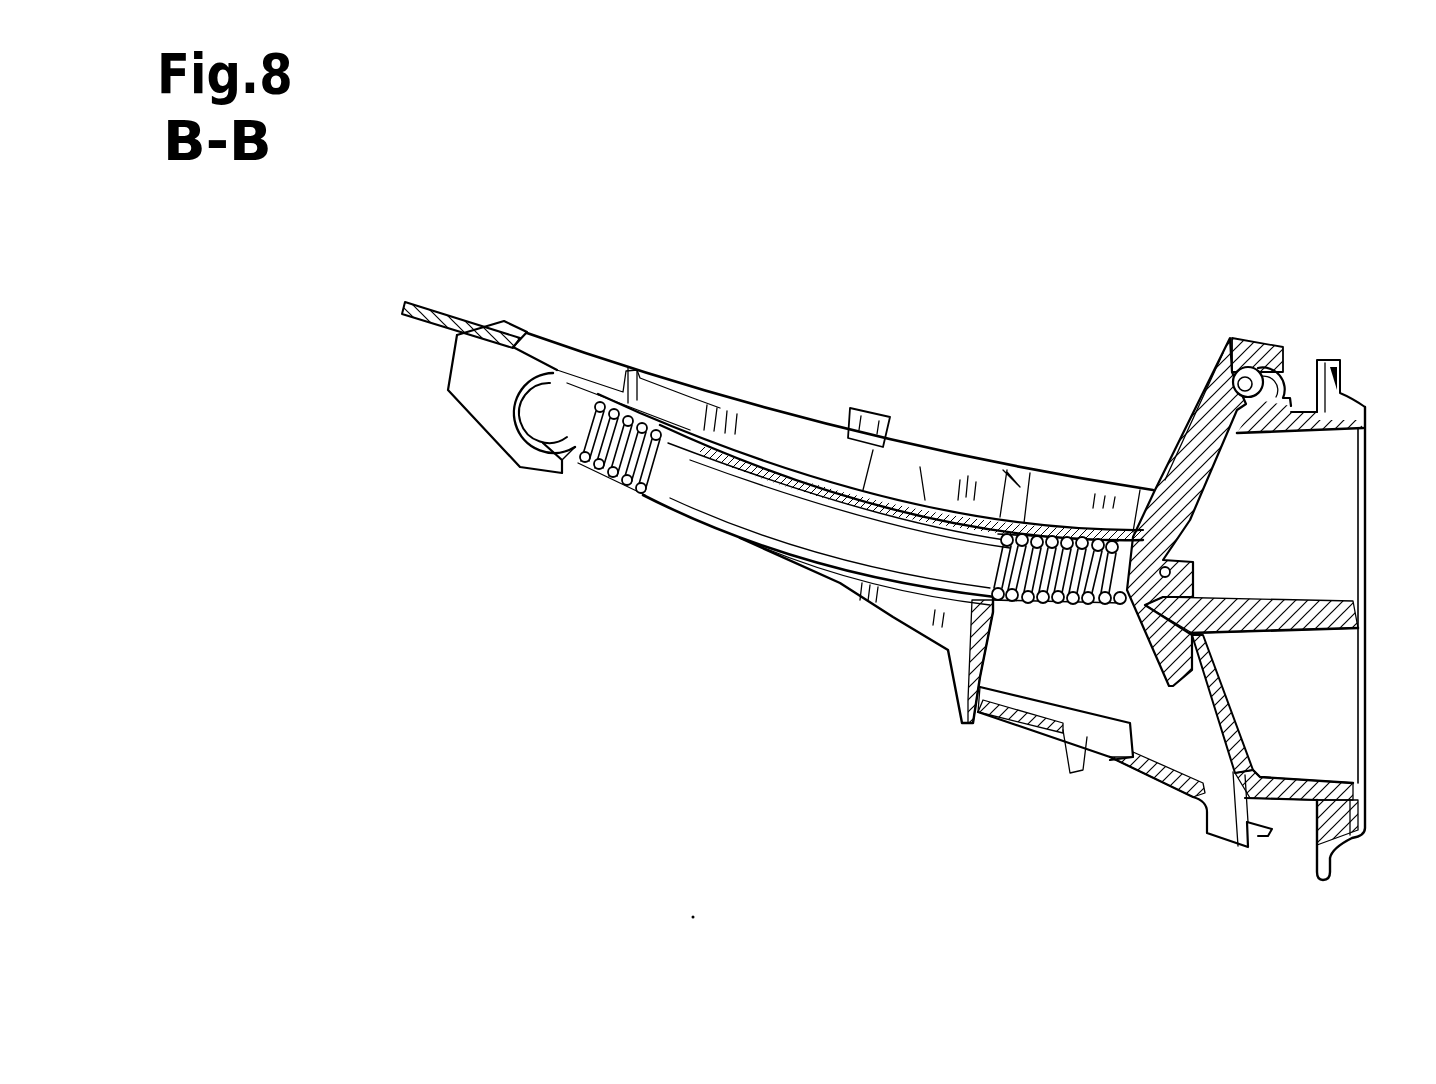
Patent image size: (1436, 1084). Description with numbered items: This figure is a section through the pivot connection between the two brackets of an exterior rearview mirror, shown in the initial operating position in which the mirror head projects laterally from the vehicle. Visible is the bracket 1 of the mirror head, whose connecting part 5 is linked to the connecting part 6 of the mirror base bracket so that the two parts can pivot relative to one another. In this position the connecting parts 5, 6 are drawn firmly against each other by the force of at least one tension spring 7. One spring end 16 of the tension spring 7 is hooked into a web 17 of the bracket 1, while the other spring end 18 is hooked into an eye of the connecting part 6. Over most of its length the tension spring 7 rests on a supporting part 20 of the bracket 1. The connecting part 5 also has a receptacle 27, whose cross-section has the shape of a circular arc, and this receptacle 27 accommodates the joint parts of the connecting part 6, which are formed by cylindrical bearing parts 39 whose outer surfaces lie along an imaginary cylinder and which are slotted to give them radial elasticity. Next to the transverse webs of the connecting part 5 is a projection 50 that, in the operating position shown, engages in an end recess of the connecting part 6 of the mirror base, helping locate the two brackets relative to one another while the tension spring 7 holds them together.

The bracket 1 is at (787, 407).
The connecting part 5 is at (1200, 393).
The connecting part 6 is at (1358, 693).
The tension spring 7 is at (1043, 527).
The spring end 16 is at (520, 430).
The web 17 is at (543, 403).
The spring end 18 is at (1170, 571).
The supporting part 20 is at (663, 423).
The receptacle 27 is at (1227, 347).
The bearing parts 39 is at (1266, 370).
The projection 50 is at (1258, 837).